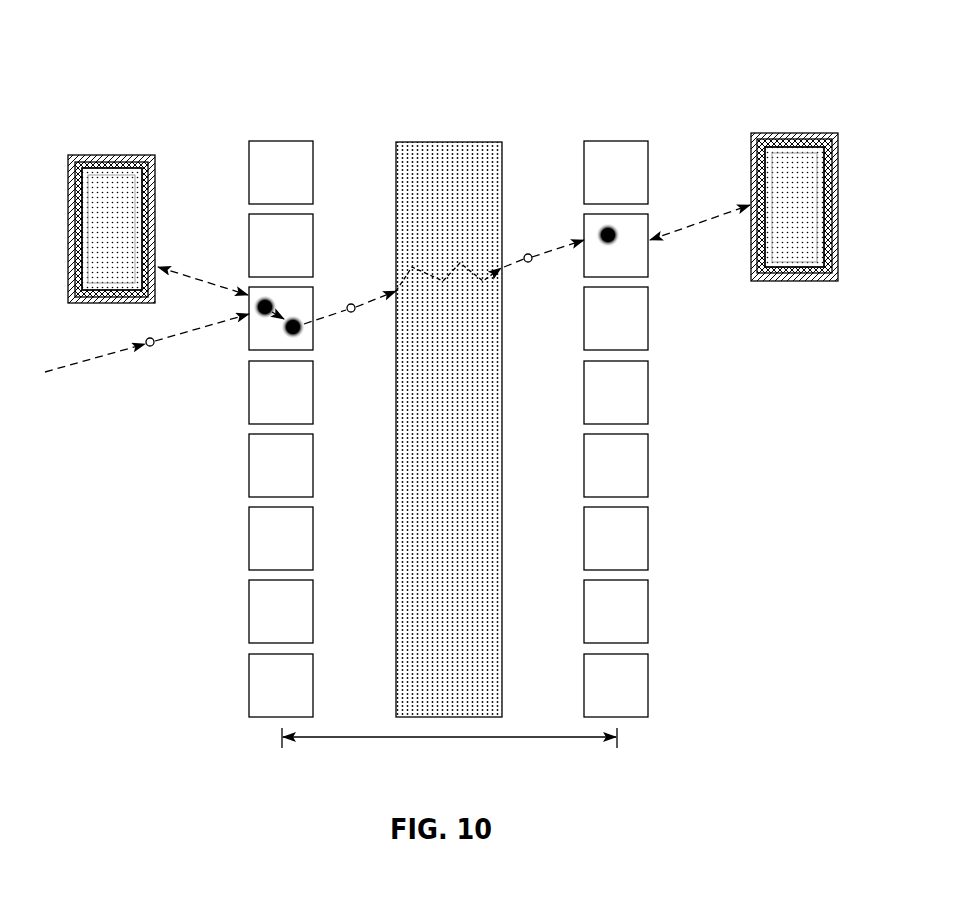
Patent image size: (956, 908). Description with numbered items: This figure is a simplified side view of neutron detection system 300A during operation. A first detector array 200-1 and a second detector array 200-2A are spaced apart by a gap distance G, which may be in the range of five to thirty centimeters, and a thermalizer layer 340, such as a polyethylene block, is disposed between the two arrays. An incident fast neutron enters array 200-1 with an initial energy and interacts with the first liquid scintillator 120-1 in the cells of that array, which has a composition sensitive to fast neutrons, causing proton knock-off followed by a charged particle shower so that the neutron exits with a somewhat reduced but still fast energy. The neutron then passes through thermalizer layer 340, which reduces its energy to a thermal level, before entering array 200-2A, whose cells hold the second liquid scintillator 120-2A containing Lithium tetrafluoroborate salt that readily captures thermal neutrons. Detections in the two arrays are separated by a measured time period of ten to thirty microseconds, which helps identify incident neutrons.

The neutron detection system 300A is at (218, 70).
The first liquid scintillator 120-1 is at (106, 185).
The first array 200-1 is at (297, 131).
The thermalizer layer 340 is at (460, 131).
The second array 200-2A is at (610, 131).
The second liquid scintillator 120-2A is at (785, 175).
The gap distance G is at (449, 746).